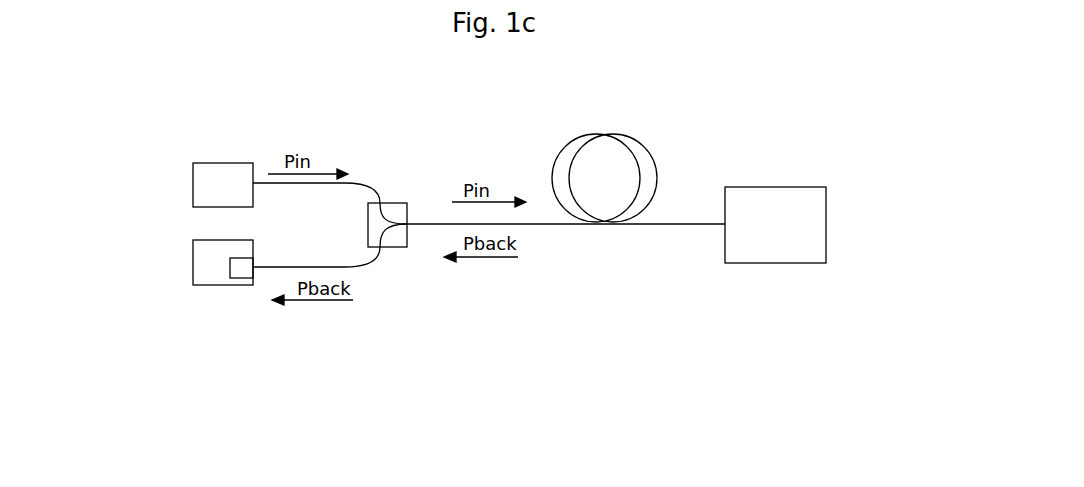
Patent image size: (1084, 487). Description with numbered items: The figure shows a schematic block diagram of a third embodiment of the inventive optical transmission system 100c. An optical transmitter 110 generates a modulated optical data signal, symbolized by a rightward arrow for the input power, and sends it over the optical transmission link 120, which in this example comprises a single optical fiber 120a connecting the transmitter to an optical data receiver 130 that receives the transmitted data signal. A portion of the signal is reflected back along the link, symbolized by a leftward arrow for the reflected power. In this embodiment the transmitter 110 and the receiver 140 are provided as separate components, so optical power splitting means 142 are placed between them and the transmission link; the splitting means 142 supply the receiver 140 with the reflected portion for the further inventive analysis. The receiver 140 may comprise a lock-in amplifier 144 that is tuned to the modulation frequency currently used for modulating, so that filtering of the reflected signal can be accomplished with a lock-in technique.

The optical transmission system 100c is at (254, 137).
The optical transmitter 110 is at (209, 193).
The receiver 140 is at (210, 268).
The lock-in amplifier 144 is at (240, 280).
The optical power splitting means 142 is at (392, 203).
The optical transmission link 120 is at (725, 308).
The optical fiber 120a is at (651, 124).
The optical data receiver 130 is at (770, 263).